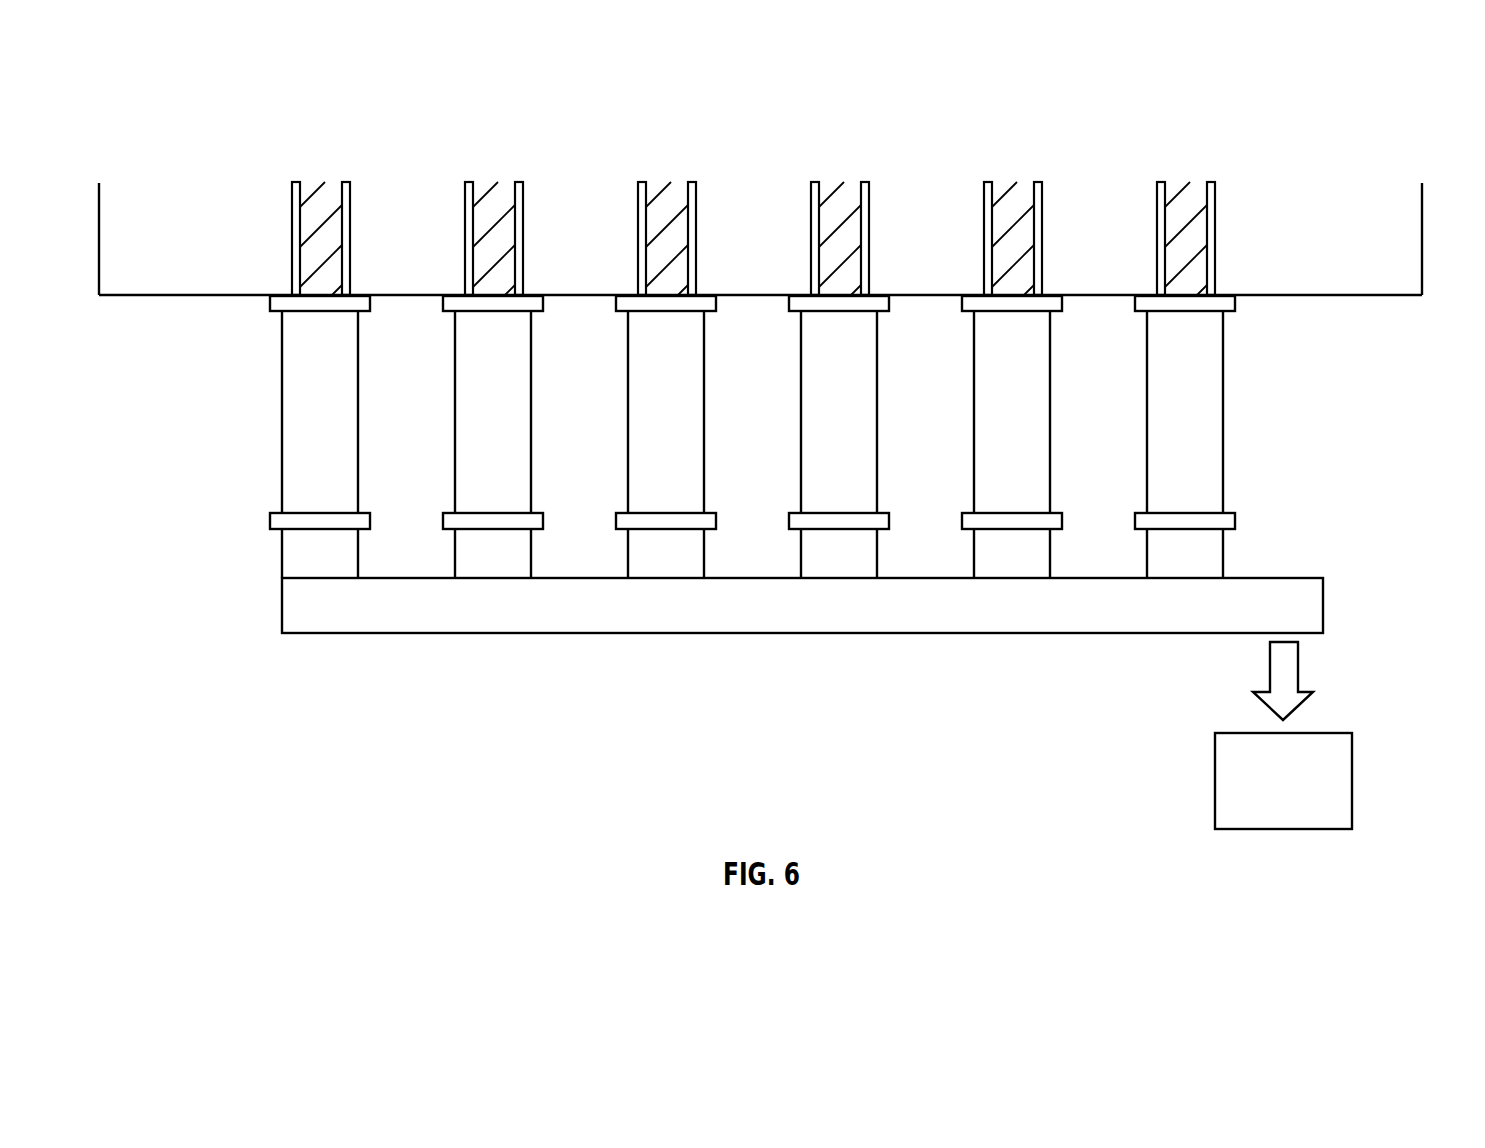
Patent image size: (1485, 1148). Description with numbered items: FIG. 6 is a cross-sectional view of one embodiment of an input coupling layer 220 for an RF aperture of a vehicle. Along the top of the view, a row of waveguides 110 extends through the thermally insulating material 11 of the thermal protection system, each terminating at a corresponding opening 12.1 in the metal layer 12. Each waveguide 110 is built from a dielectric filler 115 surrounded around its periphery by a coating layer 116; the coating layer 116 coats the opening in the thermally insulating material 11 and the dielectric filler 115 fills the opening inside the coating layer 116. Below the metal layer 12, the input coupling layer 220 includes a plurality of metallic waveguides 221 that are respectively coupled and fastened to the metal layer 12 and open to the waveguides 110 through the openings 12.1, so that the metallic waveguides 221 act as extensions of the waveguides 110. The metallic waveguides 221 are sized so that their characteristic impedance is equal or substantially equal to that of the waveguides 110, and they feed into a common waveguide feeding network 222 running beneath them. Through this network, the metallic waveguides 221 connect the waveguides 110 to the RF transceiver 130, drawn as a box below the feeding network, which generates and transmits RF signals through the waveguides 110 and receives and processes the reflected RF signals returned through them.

The thermally insulating material 11 is at (1408, 220).
The metal layer 12 is at (1398, 296).
The opening 12.1 is at (314, 296).
The waveguide 110 is at (743, 205).
The dielectric filler 115 is at (333, 237).
The coating layer 116 is at (346, 192).
The RF transceiver 130 is at (1285, 830).
The input coupling layer 220 is at (731, 498).
The metallic waveguide 221 is at (314, 560).
The waveguide feeding network 222 is at (794, 639).